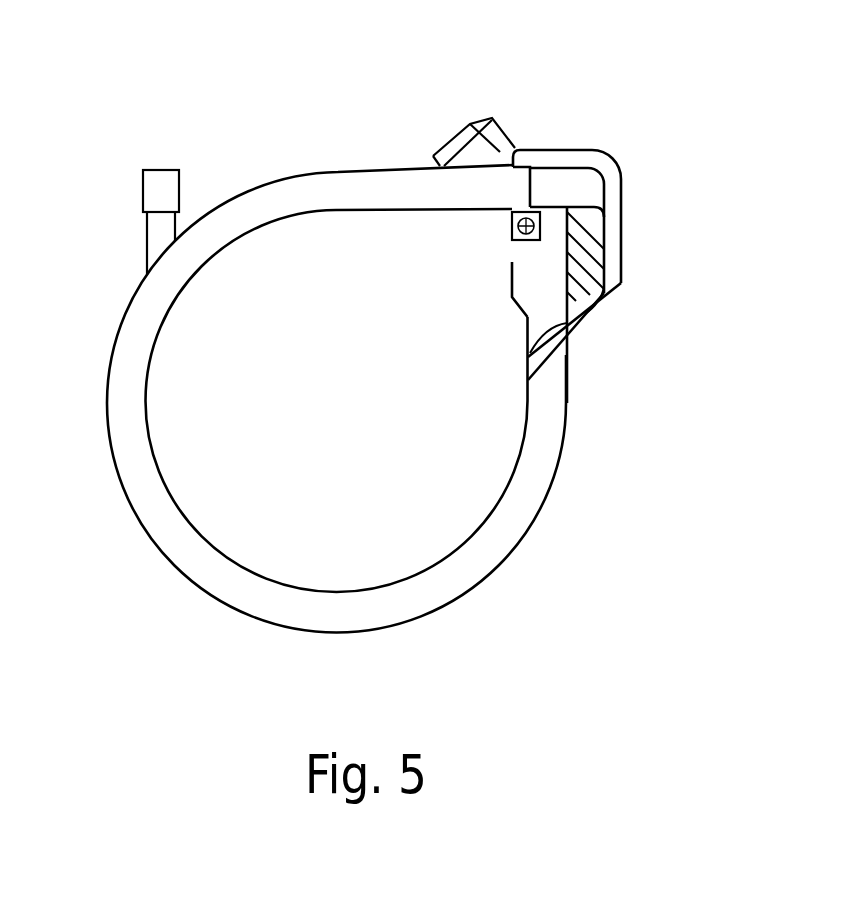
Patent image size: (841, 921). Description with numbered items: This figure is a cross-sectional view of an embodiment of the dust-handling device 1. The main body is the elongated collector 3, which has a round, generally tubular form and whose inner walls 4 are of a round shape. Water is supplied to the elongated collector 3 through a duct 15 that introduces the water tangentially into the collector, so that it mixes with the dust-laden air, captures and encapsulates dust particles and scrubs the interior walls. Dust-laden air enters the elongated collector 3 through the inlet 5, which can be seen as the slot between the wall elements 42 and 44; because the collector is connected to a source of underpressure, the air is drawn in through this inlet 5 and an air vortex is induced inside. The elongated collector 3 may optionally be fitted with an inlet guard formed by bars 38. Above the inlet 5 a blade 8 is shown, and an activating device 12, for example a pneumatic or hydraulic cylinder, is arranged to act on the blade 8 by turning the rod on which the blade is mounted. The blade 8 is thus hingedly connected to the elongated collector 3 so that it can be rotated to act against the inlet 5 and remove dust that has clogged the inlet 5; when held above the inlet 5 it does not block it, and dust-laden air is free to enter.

The hearing device 1 is at (643, 121).
The elongated collector 3 is at (298, 632).
The inner walls 4 is at (149, 421).
The inlet 5 is at (515, 255).
The blade 8 is at (553, 208).
The activating device 12 is at (447, 140).
The duct 15 is at (147, 235).
The bars 38 is at (612, 316).
The wall part 42 is at (508, 221).
The wall part 44 is at (508, 280).